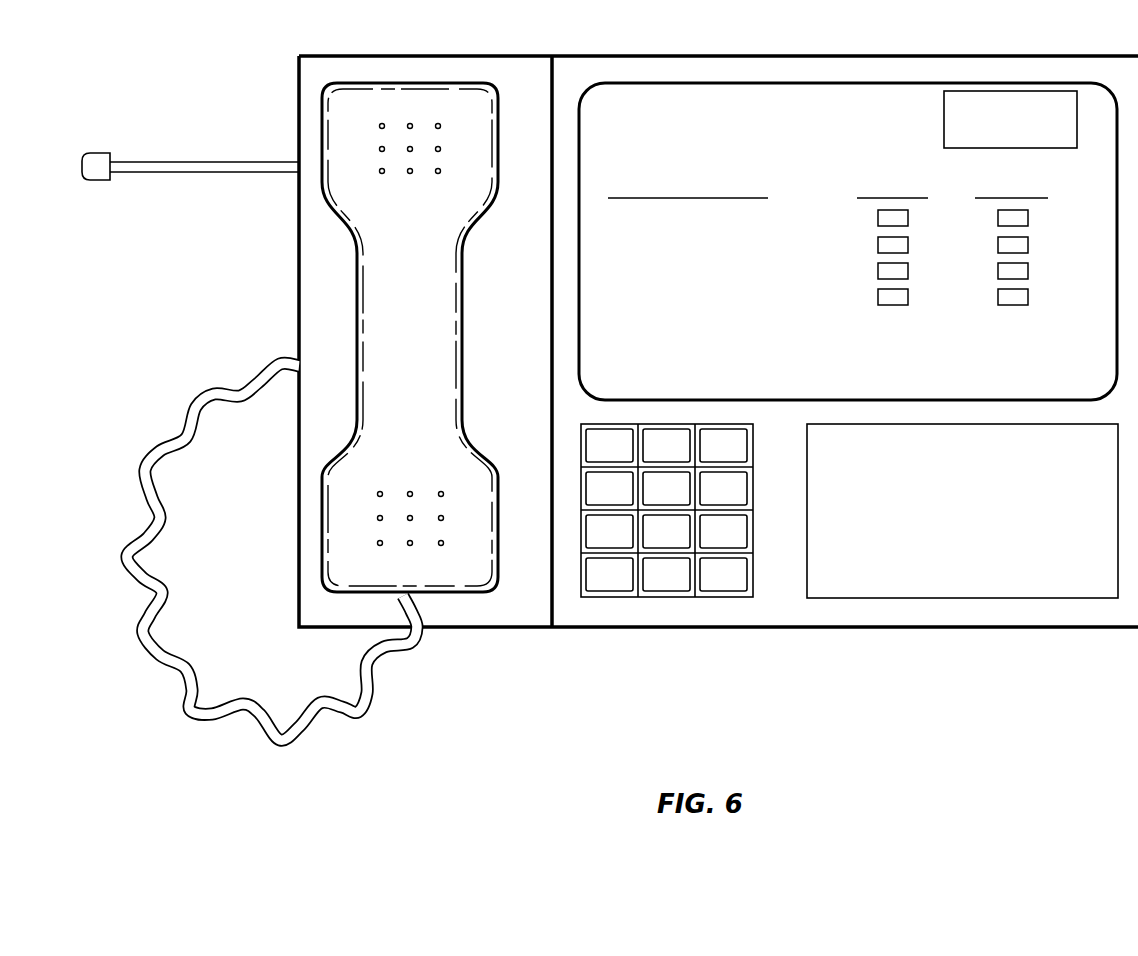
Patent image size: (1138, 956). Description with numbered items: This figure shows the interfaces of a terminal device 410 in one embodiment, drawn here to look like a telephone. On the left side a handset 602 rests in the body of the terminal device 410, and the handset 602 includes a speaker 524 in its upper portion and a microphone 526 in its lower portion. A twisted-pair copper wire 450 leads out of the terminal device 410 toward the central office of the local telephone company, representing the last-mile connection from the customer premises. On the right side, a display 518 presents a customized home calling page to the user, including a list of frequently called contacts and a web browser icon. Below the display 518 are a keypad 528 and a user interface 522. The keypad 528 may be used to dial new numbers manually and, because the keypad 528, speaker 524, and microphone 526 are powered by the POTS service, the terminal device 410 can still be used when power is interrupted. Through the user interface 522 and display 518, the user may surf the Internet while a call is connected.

The terminal device 410 is at (1082, 628).
The twisted-pair copper wire 450 is at (53, 132).
The display 518 is at (848, 82).
The user interface 522 is at (945, 547).
The speaker 524 is at (413, 123).
The microphone 526 is at (446, 553).
The keypad 528 is at (652, 603).
The handset 602 is at (391, 290).